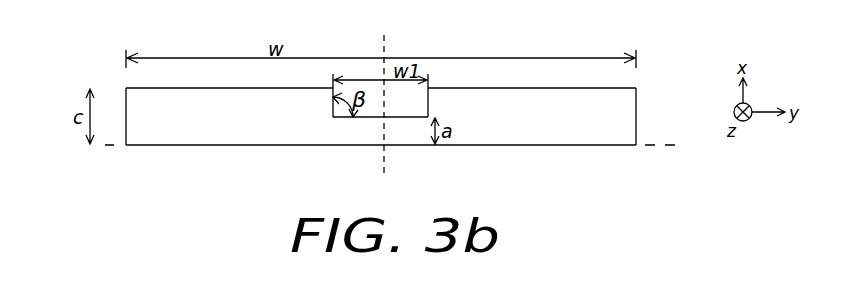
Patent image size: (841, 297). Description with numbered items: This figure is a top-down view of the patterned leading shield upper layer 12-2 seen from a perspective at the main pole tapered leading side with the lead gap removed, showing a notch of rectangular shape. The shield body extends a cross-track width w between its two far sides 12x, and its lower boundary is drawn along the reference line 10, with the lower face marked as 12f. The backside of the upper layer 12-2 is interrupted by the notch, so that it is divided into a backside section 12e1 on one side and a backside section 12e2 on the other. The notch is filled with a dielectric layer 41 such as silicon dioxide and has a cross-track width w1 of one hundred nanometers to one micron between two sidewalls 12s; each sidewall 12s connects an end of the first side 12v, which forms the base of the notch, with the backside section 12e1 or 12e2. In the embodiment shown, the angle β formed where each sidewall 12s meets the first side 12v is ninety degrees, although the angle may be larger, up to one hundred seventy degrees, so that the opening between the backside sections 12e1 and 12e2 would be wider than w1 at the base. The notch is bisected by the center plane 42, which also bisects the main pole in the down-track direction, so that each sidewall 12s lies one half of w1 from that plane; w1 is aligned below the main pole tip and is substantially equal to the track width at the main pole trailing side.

The substrate surface reference line 10 is at (381, 147).
The far side 12x is at (636, 108).
The backside section 12e1 is at (226, 88).
The backside section 12e2 is at (535, 88).
The bottom surface of conductor 12f is at (186, 146).
The sidewall 12s is at (428, 115).
The first side 12v is at (360, 117).
The dielectric layer 41 is at (410, 107).
The center plane 42 is at (387, 104).
The leading shield upper layer 12-2 is at (575, 133).